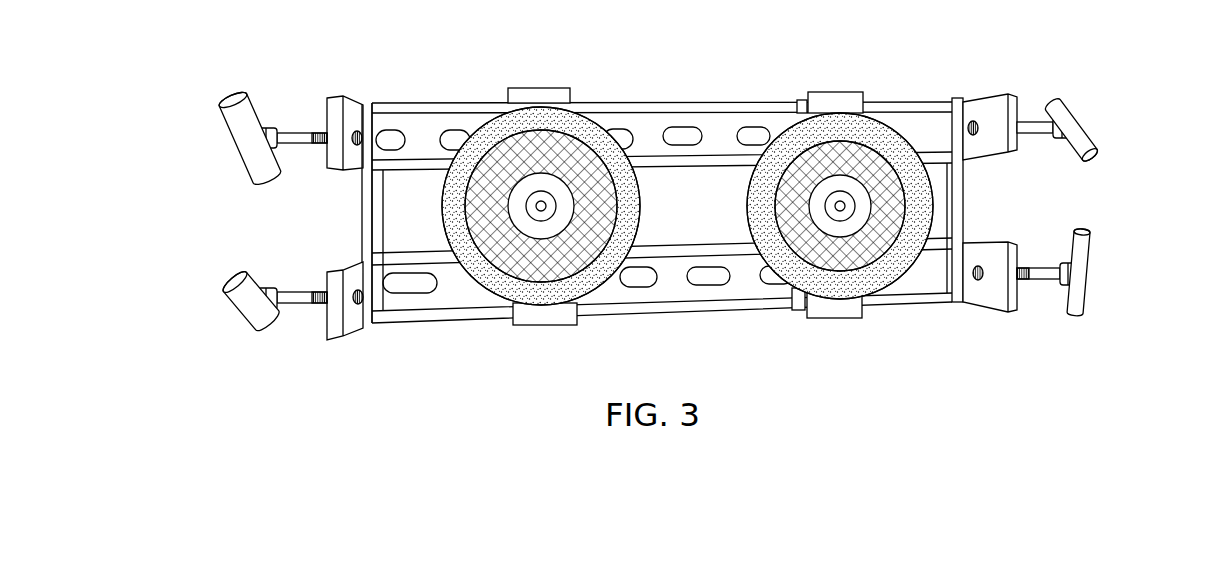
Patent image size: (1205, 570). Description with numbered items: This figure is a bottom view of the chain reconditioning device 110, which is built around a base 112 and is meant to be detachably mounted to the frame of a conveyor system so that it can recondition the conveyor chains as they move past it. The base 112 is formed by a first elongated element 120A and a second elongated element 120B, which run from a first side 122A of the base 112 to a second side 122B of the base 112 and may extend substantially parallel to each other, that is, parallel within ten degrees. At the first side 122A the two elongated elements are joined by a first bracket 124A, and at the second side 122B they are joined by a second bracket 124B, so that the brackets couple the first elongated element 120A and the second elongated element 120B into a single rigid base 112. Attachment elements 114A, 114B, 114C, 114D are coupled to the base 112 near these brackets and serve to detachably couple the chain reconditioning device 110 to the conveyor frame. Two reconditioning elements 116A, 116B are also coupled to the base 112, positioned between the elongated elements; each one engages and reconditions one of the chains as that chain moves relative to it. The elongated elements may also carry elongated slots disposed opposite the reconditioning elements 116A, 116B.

The chain reconditioning device 110 is at (653, 193).
The base 112 is at (662, 205).
The attachment element 114A is at (226, 96).
The attachment element 114B is at (1083, 131).
The attachment element 114C is at (267, 325).
The attachment element 114D is at (1087, 272).
The reconditioning element 116A is at (535, 301).
The reconditioning element 116B is at (838, 297).
The first elongated element 120A is at (735, 102).
The second elongated element 120B is at (708, 305).
The first side of the base 122A is at (257, 226).
The second side of the base 122B is at (1057, 205).
The first bracket 124A is at (362, 228).
The second bracket 124B is at (960, 221).